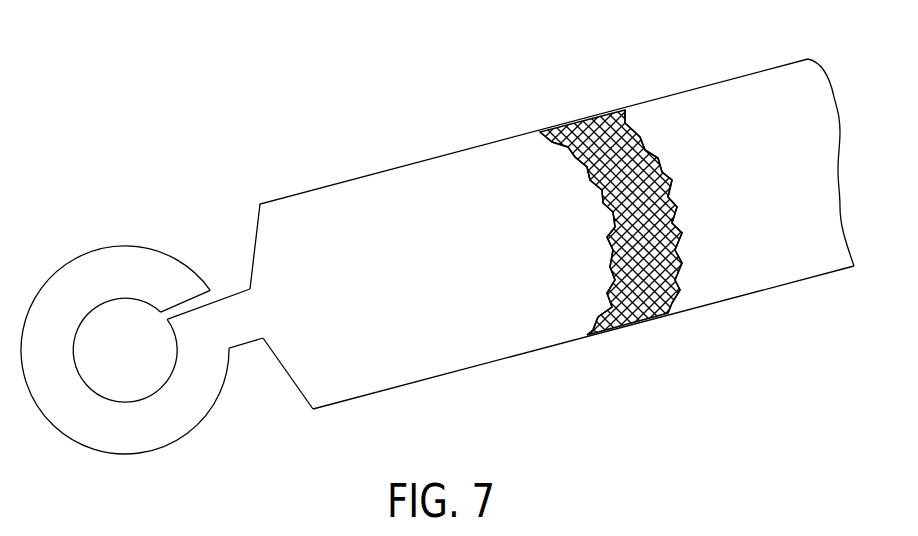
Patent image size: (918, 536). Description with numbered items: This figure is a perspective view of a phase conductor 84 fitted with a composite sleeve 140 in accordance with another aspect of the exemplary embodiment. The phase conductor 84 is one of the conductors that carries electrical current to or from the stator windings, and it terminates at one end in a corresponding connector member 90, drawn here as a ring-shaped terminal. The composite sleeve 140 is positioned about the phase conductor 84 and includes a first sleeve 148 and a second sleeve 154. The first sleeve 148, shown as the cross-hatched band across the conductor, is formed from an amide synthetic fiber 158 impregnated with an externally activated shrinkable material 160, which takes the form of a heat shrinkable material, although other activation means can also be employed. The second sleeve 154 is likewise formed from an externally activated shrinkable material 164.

The composite sleeve 140 is at (437, 261).
The connector member 90 is at (157, 447).
The phase conductor 84 is at (552, 223).
The first sleeve 148 is at (635, 297).
The amide synthetic fiber 158 is at (597, 207).
The externally activated shrinkable material 160 is at (639, 156).
The externally activated shrinkable material 164 is at (728, 92).
The second sleeve 154 is at (783, 260).